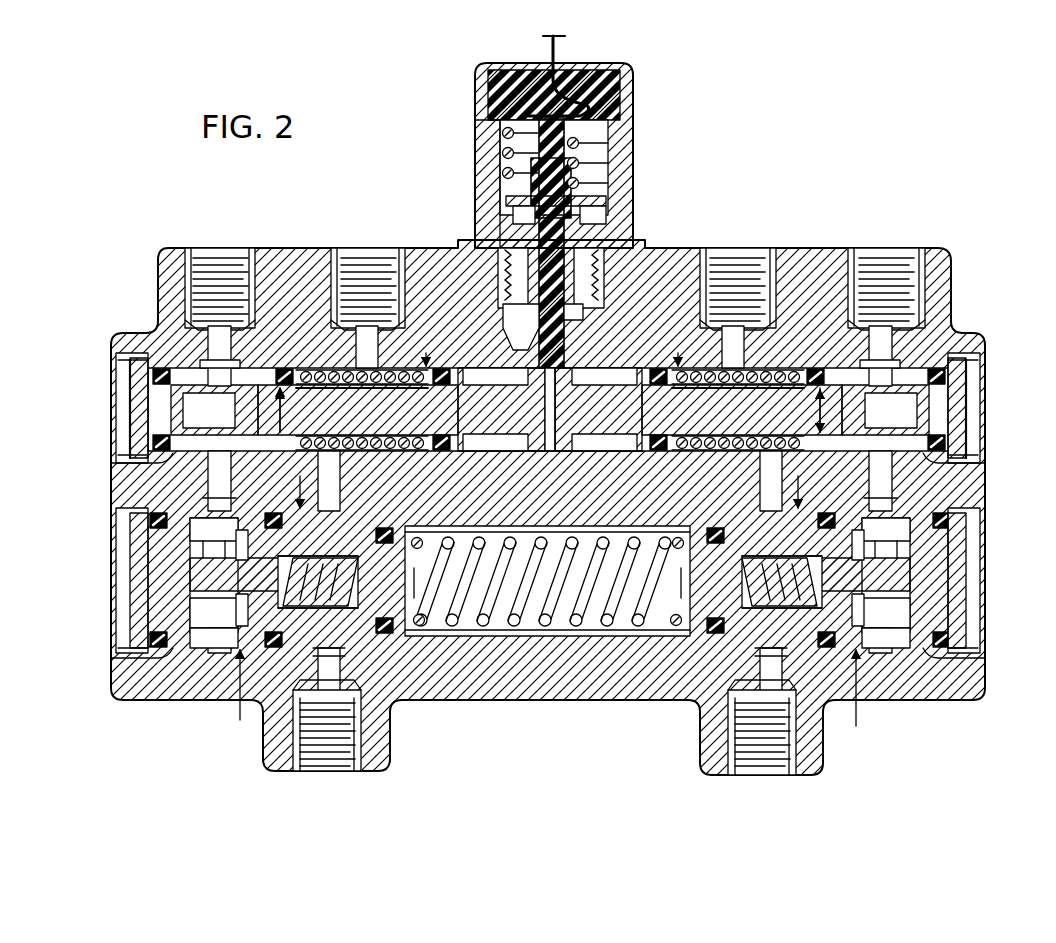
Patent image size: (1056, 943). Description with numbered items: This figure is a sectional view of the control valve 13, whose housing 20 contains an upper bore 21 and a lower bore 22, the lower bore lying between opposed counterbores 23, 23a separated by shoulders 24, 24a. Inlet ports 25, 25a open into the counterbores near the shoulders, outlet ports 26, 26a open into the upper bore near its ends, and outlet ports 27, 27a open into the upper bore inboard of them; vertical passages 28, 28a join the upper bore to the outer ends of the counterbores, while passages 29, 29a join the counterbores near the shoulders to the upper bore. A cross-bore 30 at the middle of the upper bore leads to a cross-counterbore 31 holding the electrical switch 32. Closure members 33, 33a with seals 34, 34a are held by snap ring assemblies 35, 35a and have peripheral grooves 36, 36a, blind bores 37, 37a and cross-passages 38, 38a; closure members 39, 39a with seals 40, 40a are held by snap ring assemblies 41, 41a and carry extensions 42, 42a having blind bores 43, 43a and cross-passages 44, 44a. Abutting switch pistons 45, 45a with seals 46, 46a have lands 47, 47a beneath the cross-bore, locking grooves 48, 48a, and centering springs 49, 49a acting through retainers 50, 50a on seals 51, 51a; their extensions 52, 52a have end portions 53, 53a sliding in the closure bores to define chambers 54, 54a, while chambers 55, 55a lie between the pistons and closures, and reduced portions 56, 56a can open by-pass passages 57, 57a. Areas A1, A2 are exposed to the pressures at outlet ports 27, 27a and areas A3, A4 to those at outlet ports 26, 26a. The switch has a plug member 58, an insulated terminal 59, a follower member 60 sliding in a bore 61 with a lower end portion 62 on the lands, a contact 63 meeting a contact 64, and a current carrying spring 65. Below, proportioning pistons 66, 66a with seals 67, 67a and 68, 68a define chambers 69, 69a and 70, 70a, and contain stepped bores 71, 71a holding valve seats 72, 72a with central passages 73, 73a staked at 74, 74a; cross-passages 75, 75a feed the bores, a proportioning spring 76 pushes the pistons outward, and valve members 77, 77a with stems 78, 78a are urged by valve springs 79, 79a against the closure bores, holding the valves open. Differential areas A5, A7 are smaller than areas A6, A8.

The control valve 13 is at (975, 256).
The housing 20 is at (930, 290).
The upper bore 21 is at (550, 479).
The lower bore 22 is at (468, 630).
The counterbore 23 is at (112, 640).
The counterbore 23a is at (965, 640).
The shoulder 24 is at (333, 652).
The shoulder 24a is at (748, 652).
The inlet port 25 is at (348, 757).
The inlet port 25a is at (778, 766).
The outlet port 26 is at (196, 242).
The outlet port 26a is at (907, 242).
The outlet port 27 is at (336, 242).
The outlet port 27a is at (772, 242).
The vertical passage 28 is at (198, 492).
The vertical passage 28a is at (888, 496).
The vertical passage 29 is at (333, 470).
The vertical passage 29a is at (752, 468).
The cross-bore 30 is at (557, 351).
The cross-counterbore 31 is at (572, 305).
The electrical switch 32 is at (628, 80).
The closure member 33 is at (128, 394).
The closure member 33a is at (952, 400).
The peripheral seal 34 is at (118, 462).
The peripheral seal 34a is at (965, 450).
The snap ring and groove assembly 35 is at (128, 352).
The snap ring and groove assembly 35a is at (955, 352).
The peripheral groove 36 is at (178, 361).
The peripheral groove 36a is at (913, 350).
The blind bore 37 is at (140, 372).
The blind bore 37a is at (945, 378).
The cross-passages 38 is at (200, 446).
The cross-passages 38a is at (885, 446).
The closure member 39 is at (132, 588).
The closure member 39a is at (948, 602).
The peripheral seal 40 is at (150, 641).
The peripheral seal 40a is at (932, 641).
The snap ring and groove assembly 41 is at (125, 650).
The snap ring and groove assembly 41a is at (960, 652).
The extension 42 is at (205, 613).
The extension 42a is at (880, 613).
The blind bore 43 is at (178, 554).
The blind bore 43a is at (906, 554).
The cross-passages 44 is at (205, 553).
The cross-passages 44a is at (880, 552).
The switch actuating piston 45 is at (503, 412).
The switch actuating piston 45a is at (605, 412).
The peripheral seal 46 is at (433, 445).
The peripheral seal 46a is at (652, 446).
The land 47 is at (539, 450).
The land 47a is at (549, 450).
The locking groove 48 is at (470, 446).
The locking groove 48a is at (612, 446).
The centering spring 49 is at (386, 434).
The centering spring 49a is at (704, 434).
The retainer 50 is at (290, 365).
The retainer 50a is at (800, 365).
The seal 51 is at (273, 358).
The seal 51a is at (805, 358).
The extension 52 is at (355, 413).
The extension 52a is at (755, 416).
The end portion 53 is at (232, 405).
The end portion 53a is at (860, 411).
The fluid pressure chamber 54 is at (140, 425).
The fluid pressure chamber 54a is at (940, 430).
The fluid pressure chamber 55 is at (390, 366).
The fluid pressure chamber 55a is at (672, 378).
The reduced portion 56 is at (243, 350).
The reduced portion 56a is at (852, 362).
The by-pass passage 57 is at (232, 448).
The by-pass passage 57a is at (857, 448).
The plug member 58 is at (612, 137).
The terminal 59 is at (556, 48).
The follower member 60 is at (588, 268).
The bore 61 is at (498, 270).
The lower end portion 62 is at (512, 336).
The contact 63 is at (590, 190).
The contact 64 is at (598, 204).
The current carrying spring 65 is at (505, 142).
The proportioning piston 66 is at (404, 567).
The proportioning piston 66a is at (676, 567).
The peripheral seal 67 is at (378, 626).
The peripheral seal 67a is at (706, 626).
The peripheral seal 68 is at (270, 641).
The peripheral seal 68a is at (814, 641).
The fluid pressure chamber 69 is at (300, 520).
The fluid pressure chamber 69a is at (784, 520).
The fluid pressure chamber 70 is at (200, 644).
The fluid pressure chamber 70a is at (878, 644).
The stepped bore 71 is at (342, 560).
The stepped bore 71a is at (742, 565).
The valve seat 72 is at (240, 605).
The valve seat 72a is at (844, 606).
The central passage 73 is at (240, 548).
The central passage 73a is at (844, 546).
The staking 74 is at (205, 645).
The staking 74a is at (870, 645).
The cross-passages 75 is at (416, 618).
The cross-passages 75a is at (672, 616).
The proportioning spring 76 is at (526, 630).
The valve member 77 is at (290, 572).
The valve member 77a is at (794, 572).
The stem portion 78 is at (200, 575).
The stem portion 78a is at (884, 578).
The valve spring 79 is at (343, 597).
The valve spring 79a is at (741, 597).
The effective annular area A1 is at (423, 347).
The effective annular area A2 is at (675, 347).
The effective area A3 is at (300, 410).
The effective area A4 is at (803, 410).
The differential area A5 is at (291, 486).
The differential area A6 is at (235, 695).
The differential area A7 is at (797, 487).
The differential area A8 is at (851, 699).